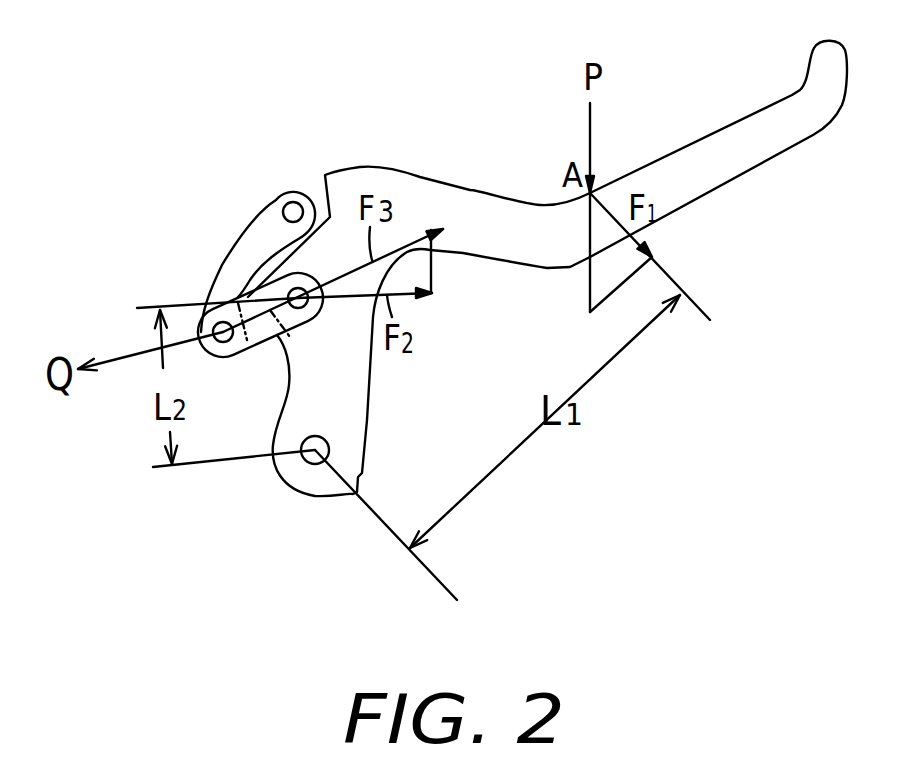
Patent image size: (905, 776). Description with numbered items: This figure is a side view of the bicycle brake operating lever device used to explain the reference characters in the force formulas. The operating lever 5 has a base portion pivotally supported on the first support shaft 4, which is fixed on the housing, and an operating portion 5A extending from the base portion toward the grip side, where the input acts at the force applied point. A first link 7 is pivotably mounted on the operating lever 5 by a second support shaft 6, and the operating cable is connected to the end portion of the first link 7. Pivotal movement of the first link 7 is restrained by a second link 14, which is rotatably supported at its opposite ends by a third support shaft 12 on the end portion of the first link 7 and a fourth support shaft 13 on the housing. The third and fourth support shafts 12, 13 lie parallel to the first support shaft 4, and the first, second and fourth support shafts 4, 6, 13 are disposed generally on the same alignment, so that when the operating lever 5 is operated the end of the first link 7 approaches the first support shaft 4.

The first support shaft 4 is at (315, 460).
The operating lever 5 is at (467, 182).
The operating portion 5A is at (740, 137).
The second support shaft 6 is at (303, 277).
The first link 7 is at (248, 283).
The third support shaft 12 is at (228, 357).
The fourth support shaft 13 is at (293, 201).
The second link 14 is at (252, 217).